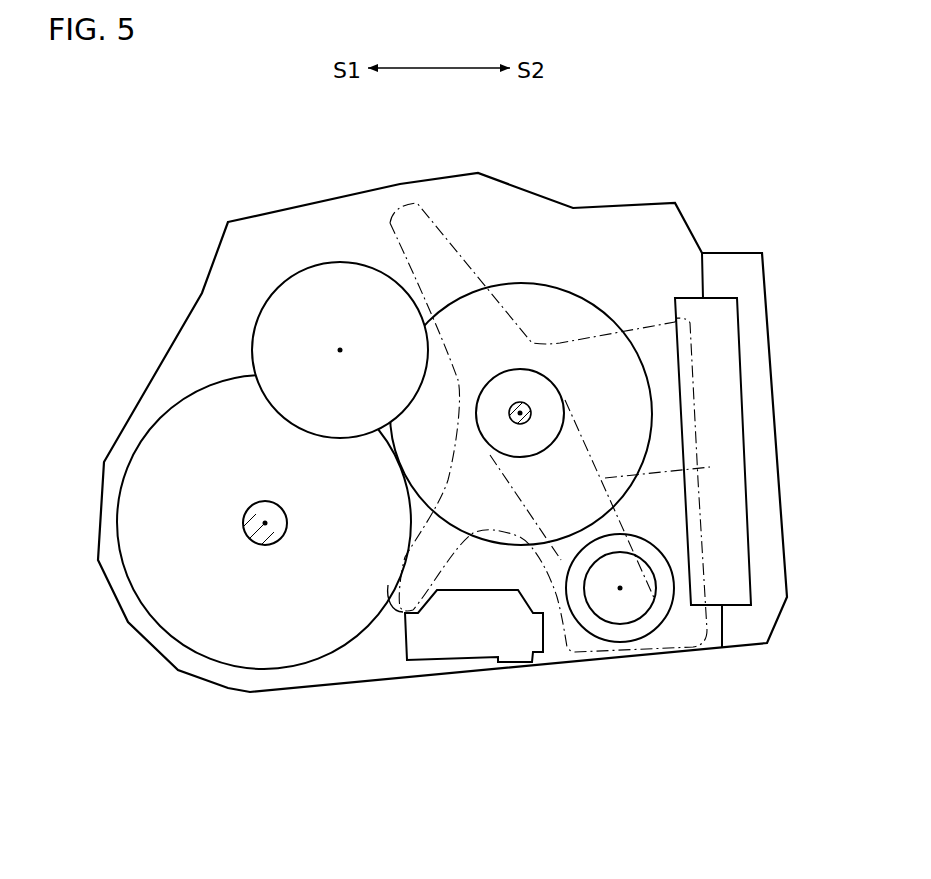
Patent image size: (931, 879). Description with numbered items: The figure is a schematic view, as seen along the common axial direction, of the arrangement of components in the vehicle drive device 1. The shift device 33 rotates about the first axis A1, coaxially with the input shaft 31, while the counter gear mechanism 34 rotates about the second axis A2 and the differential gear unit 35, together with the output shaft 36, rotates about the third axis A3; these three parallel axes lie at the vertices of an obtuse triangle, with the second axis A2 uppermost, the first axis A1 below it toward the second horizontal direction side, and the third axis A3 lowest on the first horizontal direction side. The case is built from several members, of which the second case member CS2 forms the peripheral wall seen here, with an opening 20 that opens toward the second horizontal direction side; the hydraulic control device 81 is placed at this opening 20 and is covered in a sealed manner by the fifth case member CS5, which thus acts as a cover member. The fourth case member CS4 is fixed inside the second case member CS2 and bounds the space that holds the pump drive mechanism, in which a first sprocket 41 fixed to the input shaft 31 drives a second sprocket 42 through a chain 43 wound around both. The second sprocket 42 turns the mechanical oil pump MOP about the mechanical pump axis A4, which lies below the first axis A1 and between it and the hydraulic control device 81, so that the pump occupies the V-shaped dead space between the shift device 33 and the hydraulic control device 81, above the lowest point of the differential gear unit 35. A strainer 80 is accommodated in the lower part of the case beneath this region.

The vehicle drive device 1 is at (160, 207).
The opening 20 is at (672, 285).
The input shaft 31 is at (532, 407).
The shift device 33 is at (553, 298).
The counter gear mechanism 34 is at (288, 293).
The differential gear unit 35 is at (178, 415).
The output shaft 36 is at (243, 525).
The first sprocket 41 is at (548, 430).
The second sprocket 42 is at (642, 608).
The chain 43 is at (615, 500).
The strainer 80 is at (473, 643).
The hydraulic control device 81 is at (733, 397).
The first axis A1 is at (518, 408).
The second axis A2 is at (340, 348).
The third axis A3 is at (268, 526).
The mechanical pump axis A4 is at (618, 592).
The second case member CS2 is at (535, 187).
The fourth case member CS4 is at (465, 270).
The fifth case member CS5 is at (768, 303).
The mechanical oil pump MOP is at (660, 610).